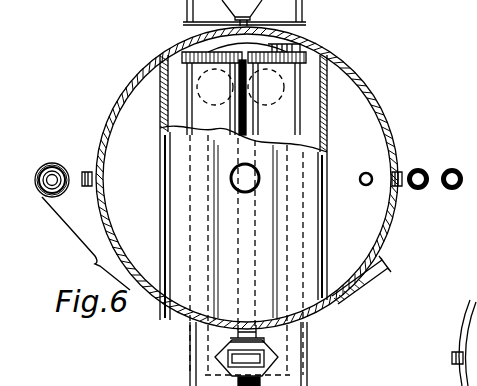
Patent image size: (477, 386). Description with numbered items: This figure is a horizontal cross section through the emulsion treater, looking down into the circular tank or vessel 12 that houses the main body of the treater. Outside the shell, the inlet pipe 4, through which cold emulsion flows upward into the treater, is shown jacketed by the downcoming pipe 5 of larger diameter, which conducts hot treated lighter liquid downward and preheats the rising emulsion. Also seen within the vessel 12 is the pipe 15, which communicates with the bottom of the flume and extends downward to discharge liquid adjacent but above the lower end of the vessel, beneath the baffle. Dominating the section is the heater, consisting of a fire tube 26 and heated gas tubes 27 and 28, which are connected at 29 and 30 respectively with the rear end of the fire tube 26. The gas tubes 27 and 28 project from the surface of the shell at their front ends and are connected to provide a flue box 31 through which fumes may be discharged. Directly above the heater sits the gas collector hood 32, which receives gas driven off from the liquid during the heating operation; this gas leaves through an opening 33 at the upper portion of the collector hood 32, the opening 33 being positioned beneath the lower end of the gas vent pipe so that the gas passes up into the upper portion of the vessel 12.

The inlet pipe 4 is at (61, 167).
The downcoming pipe 5 is at (42, 167).
The vessel 12 is at (366, 79).
The pipe 15 is at (368, 172).
The fire tube 26 is at (257, 47).
The heated gas tube 27 is at (304, 118).
The heated gas tube 28 is at (197, 108).
The connection 29 is at (250, 86).
The connection 30 is at (236, 85).
The flue box 31 is at (276, 357).
The gas collector hood 32 is at (327, 218).
The opening 33 is at (262, 186).